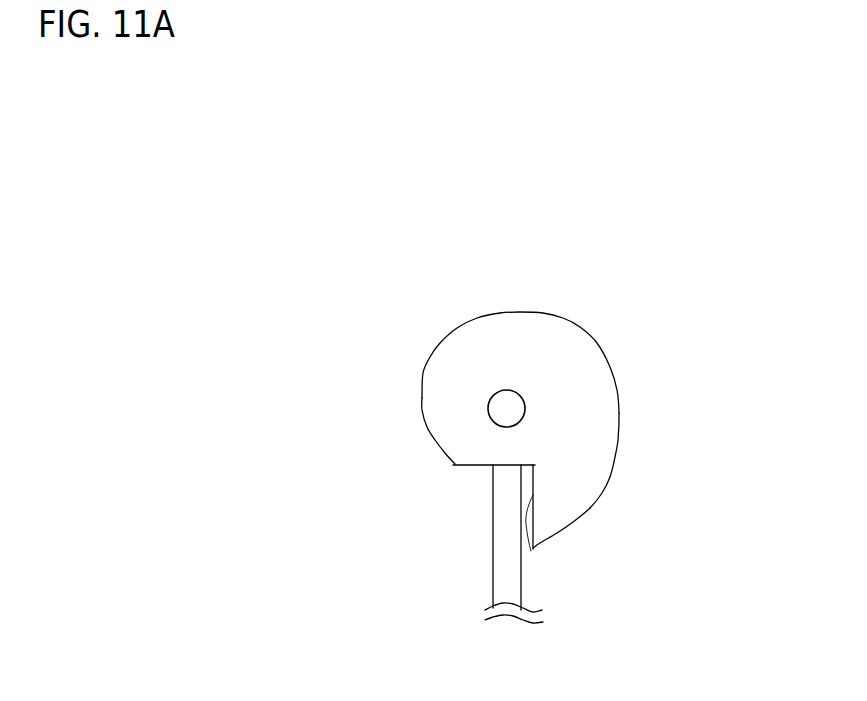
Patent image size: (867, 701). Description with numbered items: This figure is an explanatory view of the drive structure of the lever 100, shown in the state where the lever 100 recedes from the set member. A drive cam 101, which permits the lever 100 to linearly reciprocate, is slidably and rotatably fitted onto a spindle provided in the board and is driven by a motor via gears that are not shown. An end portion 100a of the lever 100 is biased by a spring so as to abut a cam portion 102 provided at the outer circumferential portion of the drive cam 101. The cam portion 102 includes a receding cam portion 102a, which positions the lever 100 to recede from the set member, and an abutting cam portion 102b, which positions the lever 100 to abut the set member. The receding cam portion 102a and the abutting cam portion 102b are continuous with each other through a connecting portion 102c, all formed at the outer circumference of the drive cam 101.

The lever 100 is at (513, 593).
The end portion of the lever 100a is at (502, 513).
The drive cam 101 is at (563, 310).
The cam portion 102 is at (440, 344).
The receding cam portion 102a is at (460, 472).
The abutting cam portion 102b is at (617, 453).
The connecting portion 102c is at (527, 548).